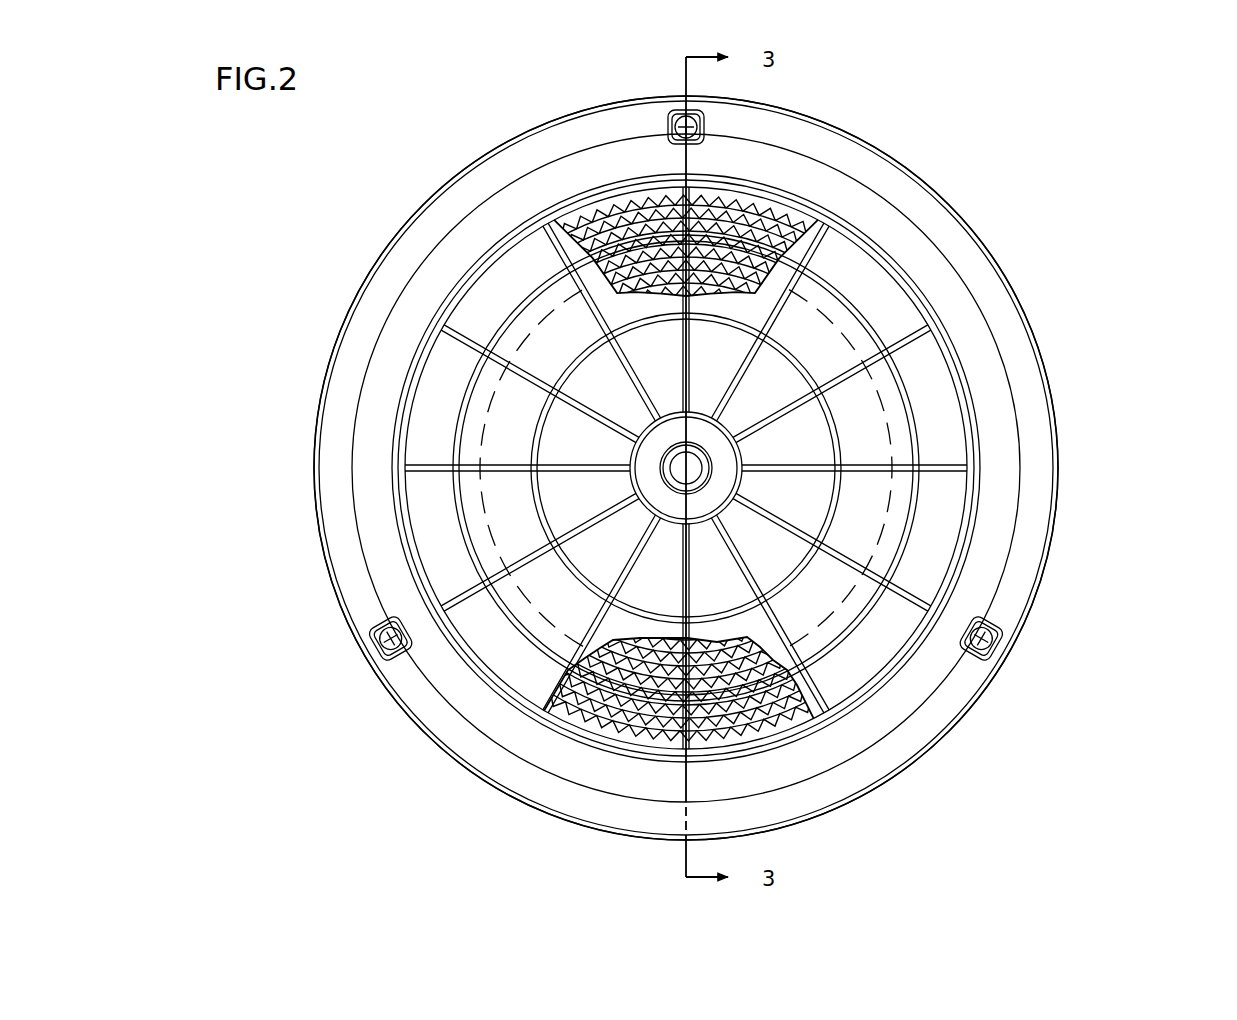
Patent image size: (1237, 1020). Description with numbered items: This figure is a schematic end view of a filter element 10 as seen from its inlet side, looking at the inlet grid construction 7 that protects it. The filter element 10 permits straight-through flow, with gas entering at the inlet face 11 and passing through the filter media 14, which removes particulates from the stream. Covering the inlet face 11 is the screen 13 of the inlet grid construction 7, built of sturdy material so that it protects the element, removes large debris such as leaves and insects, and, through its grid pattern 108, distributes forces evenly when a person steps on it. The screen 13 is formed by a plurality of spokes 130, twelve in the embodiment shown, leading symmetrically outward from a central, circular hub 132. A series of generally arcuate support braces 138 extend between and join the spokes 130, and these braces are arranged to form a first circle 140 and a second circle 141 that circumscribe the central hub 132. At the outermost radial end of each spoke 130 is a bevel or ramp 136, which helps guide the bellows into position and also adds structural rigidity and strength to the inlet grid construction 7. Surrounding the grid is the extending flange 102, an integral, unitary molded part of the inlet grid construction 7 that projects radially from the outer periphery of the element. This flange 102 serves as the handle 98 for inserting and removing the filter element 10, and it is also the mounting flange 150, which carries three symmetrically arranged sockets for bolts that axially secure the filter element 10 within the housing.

The inlet grid construction 7 is at (415, 168).
The filter element 10 is at (968, 120).
The handle 98 is at (1010, 246).
The extending flange 102 is at (1010, 301).
The screen 13 is at (976, 382).
The grid pattern 108 is at (988, 427).
The mounting flange 150 is at (1075, 516).
The first circle 140 is at (851, 301).
The second circle 141 is at (800, 360).
The central hub 132 is at (740, 453).
The spokes 130 is at (596, 470).
The support braces 138 is at (515, 618).
The ramp 136 is at (813, 683).
The filter media 14 is at (615, 720).
The inlet face 11 is at (795, 718).